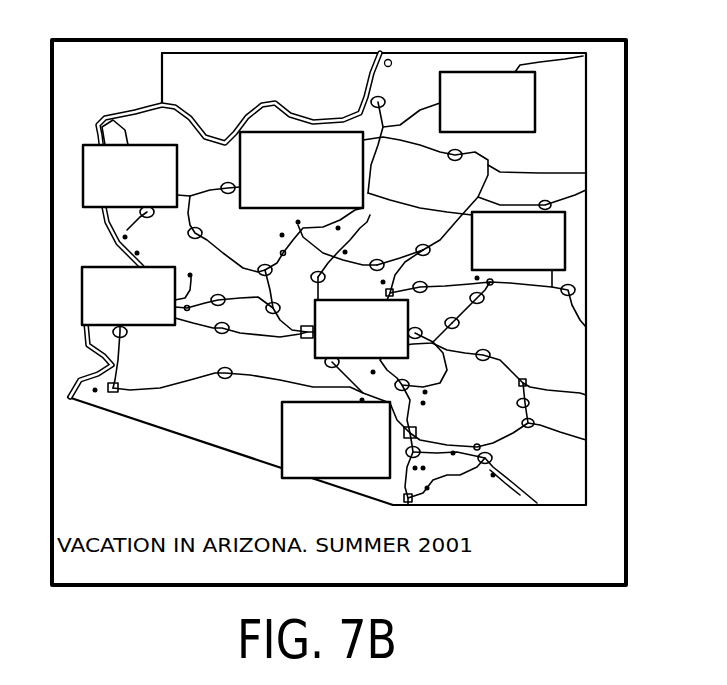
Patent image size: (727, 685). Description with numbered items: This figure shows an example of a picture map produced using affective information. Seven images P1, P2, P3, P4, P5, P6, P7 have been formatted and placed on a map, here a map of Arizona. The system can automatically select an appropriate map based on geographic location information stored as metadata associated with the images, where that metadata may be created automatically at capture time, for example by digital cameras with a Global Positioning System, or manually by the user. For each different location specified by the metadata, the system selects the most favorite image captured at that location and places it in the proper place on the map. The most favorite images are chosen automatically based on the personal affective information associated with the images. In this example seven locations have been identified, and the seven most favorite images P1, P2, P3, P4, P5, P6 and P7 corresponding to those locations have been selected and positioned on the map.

The image P1 is at (361, 329).
The image P2 is at (128, 296).
The image P3 is at (130, 176).
The image P4 is at (301, 170).
The image P5 is at (487, 102).
The image P6 is at (518, 241).
The image P7 is at (336, 440).